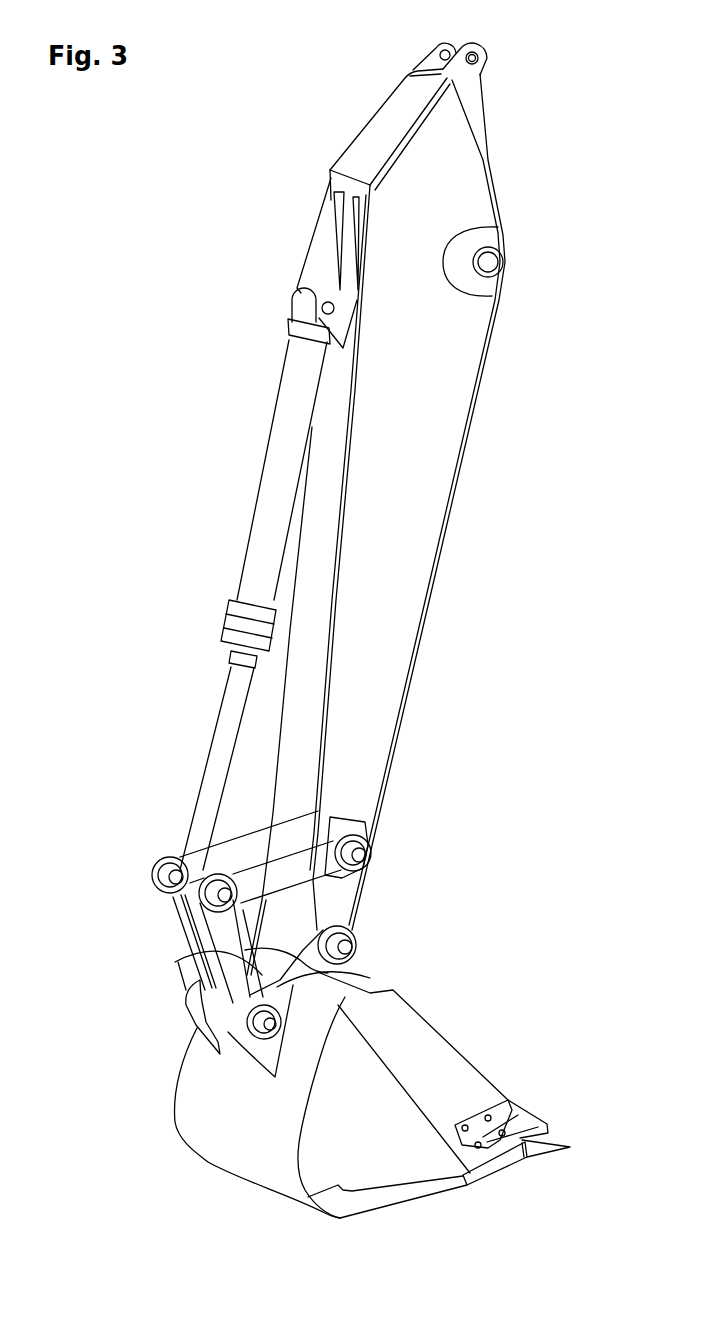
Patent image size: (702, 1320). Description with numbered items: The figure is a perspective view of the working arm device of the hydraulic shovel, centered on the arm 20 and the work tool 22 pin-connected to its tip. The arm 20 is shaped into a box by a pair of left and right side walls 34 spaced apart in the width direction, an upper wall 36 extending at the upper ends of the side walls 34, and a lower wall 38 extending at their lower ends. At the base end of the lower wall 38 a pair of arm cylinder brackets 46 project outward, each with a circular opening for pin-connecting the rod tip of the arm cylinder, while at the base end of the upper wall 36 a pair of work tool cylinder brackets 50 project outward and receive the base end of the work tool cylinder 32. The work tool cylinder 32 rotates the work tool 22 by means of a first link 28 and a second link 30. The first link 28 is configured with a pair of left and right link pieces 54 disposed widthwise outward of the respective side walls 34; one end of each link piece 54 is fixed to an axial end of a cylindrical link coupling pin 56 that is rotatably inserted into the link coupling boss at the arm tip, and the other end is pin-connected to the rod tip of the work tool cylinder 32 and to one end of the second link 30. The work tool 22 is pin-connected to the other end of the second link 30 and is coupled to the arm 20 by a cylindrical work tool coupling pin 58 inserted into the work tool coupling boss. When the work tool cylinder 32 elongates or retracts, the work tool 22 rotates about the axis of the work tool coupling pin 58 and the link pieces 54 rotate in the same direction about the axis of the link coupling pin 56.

The arm 20 is at (347, 119).
The work tool 22 is at (194, 1123).
The first link 28 is at (295, 887).
The second link 30 is at (210, 957).
The work tool cylinder 32 is at (258, 545).
The side walls 34 is at (445, 399).
The upper wall 36 is at (292, 782).
The lower wall 38 is at (437, 596).
The arm cylinder brackets 46 is at (442, 67).
The work tool cylinder brackets 50 is at (322, 277).
The link pieces 54 is at (262, 864).
The link coupling pin 56 is at (372, 856).
The work tool coupling pin 58 is at (352, 953).